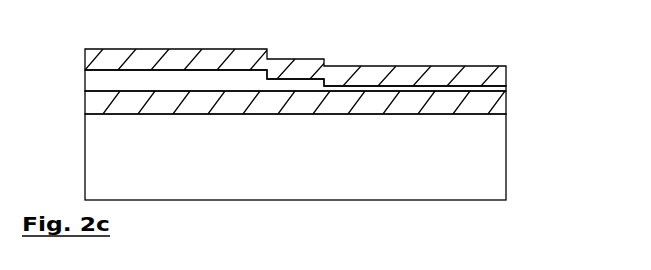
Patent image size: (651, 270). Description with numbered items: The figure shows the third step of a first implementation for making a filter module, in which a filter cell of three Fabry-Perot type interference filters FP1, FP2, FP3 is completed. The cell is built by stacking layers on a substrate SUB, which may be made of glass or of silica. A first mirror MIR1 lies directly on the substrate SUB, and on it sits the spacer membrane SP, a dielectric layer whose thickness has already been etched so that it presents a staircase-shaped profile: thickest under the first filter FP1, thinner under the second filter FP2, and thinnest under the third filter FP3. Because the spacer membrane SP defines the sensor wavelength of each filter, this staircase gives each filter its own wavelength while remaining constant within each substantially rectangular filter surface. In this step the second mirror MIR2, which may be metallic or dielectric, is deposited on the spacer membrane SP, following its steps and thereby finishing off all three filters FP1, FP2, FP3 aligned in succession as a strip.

The first Fabry-Perot interference filter FP1 is at (164, 49).
The second Fabry-Perot interference filter FP2 is at (290, 76).
The third Fabry-Perot interference filter FP3 is at (412, 64).
The second mirror MIR2 is at (334, 46).
The spacer membrane SP is at (502, 89).
The first mirror MIR1 is at (498, 105).
The substrate SUB is at (490, 157).